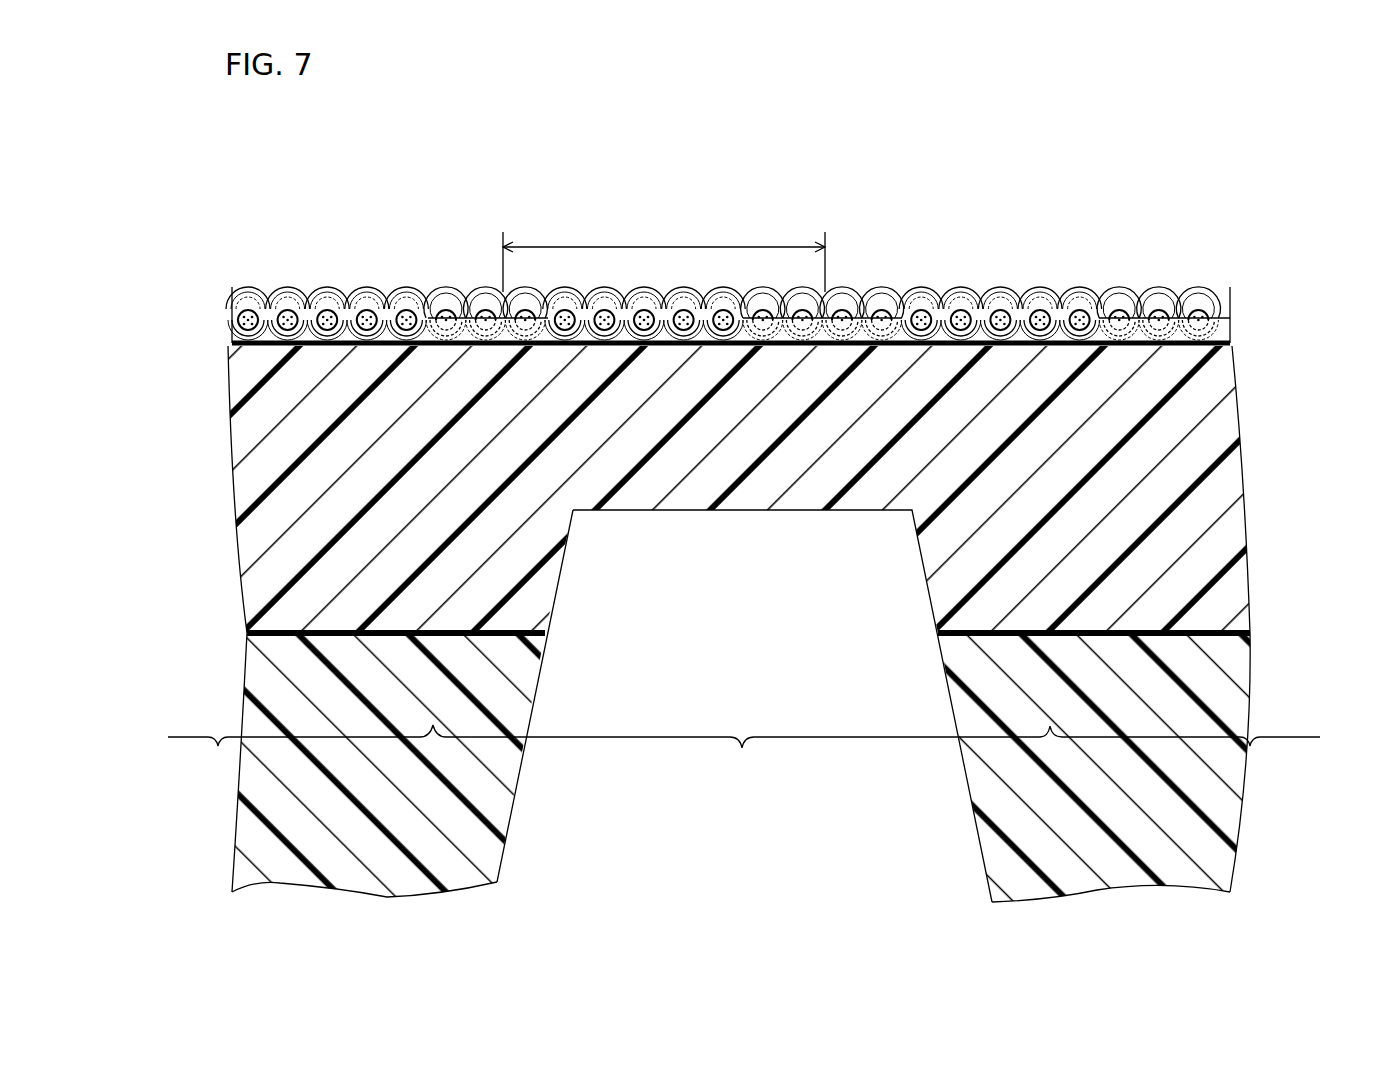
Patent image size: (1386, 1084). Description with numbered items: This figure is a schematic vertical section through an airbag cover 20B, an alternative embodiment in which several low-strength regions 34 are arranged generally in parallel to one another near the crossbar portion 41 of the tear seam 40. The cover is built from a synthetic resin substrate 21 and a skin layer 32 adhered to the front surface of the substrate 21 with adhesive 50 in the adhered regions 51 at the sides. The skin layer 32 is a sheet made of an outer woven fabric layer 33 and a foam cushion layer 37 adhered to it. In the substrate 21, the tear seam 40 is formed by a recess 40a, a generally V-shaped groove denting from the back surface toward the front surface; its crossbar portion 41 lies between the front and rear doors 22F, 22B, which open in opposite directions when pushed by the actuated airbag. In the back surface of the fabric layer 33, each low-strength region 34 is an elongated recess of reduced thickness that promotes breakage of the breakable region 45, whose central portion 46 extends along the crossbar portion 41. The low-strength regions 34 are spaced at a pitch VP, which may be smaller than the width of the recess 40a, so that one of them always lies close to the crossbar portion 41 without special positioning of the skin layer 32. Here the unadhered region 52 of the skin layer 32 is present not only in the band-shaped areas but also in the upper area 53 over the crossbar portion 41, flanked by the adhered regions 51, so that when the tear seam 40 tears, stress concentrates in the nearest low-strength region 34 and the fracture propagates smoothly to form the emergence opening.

The airbag cover 20B is at (272, 228).
The substrate 21 is at (1115, 862).
The front door 22F is at (213, 808).
The rear door 22B is at (1243, 808).
The skin layer 32 is at (408, 196).
The fabric layer 33 is at (325, 292).
The low-strength region 34 is at (238, 330).
The cushion layer 37 is at (381, 360).
The tear seam 40 is at (744, 723).
The crossbar portion 41 is at (861, 818).
The recess 40a is at (517, 787).
The breakable region 45 is at (745, 232).
The central portion 46 is at (665, 198).
The adhesive 50 is at (268, 642).
The end region 51 is at (1053, 265).
The unadhered region 52 is at (743, 760).
The upper area 53 is at (743, 760).
The pitch VP is at (664, 254).